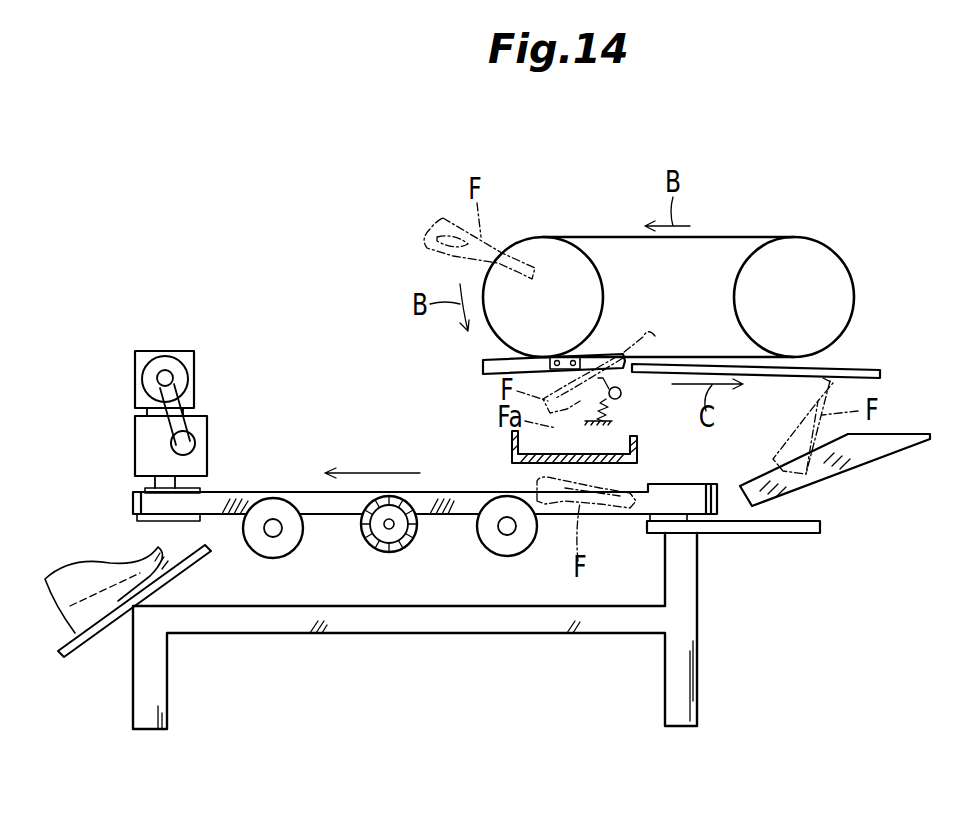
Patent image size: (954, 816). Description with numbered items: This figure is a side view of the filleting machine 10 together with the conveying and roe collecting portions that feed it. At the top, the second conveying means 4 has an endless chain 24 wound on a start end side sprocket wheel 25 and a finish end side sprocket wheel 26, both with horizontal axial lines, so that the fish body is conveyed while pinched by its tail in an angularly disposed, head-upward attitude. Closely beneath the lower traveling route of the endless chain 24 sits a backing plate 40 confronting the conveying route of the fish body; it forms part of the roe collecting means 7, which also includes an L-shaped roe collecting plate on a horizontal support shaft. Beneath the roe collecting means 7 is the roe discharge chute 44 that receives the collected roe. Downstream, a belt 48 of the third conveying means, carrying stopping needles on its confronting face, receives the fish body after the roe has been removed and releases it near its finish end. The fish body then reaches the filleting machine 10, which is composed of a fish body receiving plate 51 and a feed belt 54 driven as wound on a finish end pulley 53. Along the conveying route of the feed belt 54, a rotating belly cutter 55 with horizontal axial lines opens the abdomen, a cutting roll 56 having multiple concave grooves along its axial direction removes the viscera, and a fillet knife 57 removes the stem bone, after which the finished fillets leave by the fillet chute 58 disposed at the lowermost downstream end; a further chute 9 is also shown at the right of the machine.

The second conveying means 4 is at (668, 253).
The endless chain 24 is at (740, 236).
The start end side sprocket wheel 25 is at (815, 250).
The finish end side sprocket wheel 26 is at (543, 238).
The backing plate 40 is at (484, 360).
The belt 48 is at (786, 378).
The roe collecting means 7 is at (637, 399).
The roe discharge chute 44 is at (512, 438).
The discharge chute 9 is at (866, 462).
The fish body receiving plate 51 is at (767, 533).
The feed belt 54 is at (389, 474).
The finish end pulley 53 is at (140, 488).
The belly cutter 55 is at (518, 552).
The cutting roll 56 is at (392, 549).
The fillet knife 57 is at (282, 550).
The filleting machine 10 is at (117, 426).
The fillet chute 58 is at (80, 652).